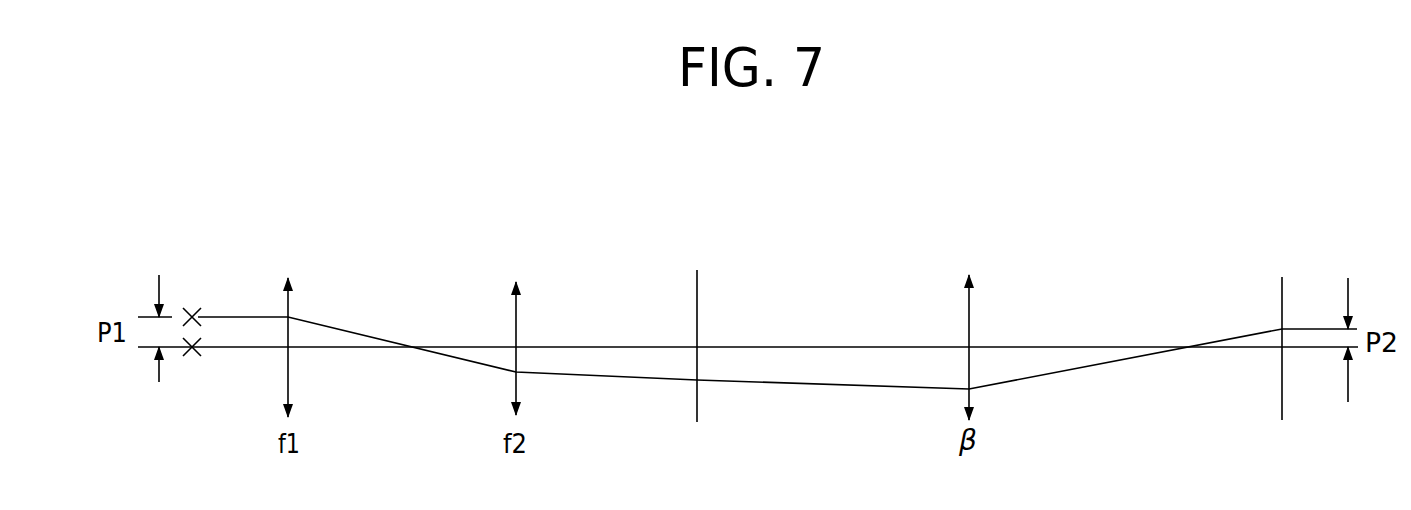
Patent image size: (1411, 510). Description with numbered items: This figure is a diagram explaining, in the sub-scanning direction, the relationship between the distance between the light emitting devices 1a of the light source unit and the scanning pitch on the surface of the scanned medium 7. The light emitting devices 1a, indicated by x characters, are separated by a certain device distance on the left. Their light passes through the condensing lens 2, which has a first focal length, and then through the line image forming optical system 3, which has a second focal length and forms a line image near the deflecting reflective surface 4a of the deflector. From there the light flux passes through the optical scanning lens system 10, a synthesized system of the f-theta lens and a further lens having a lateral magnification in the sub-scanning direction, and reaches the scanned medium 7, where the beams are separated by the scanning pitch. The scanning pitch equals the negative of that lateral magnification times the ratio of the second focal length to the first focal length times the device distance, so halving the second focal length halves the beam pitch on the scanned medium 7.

The light emitting devices 1a is at (209, 296).
The condensing lens 2 is at (290, 329).
The line image forming optical system 3 is at (515, 326).
The deflecting reflective surface 4a is at (697, 329).
The optical scanning lens system 10 is at (970, 329).
The scanned medium 7 is at (1282, 328).